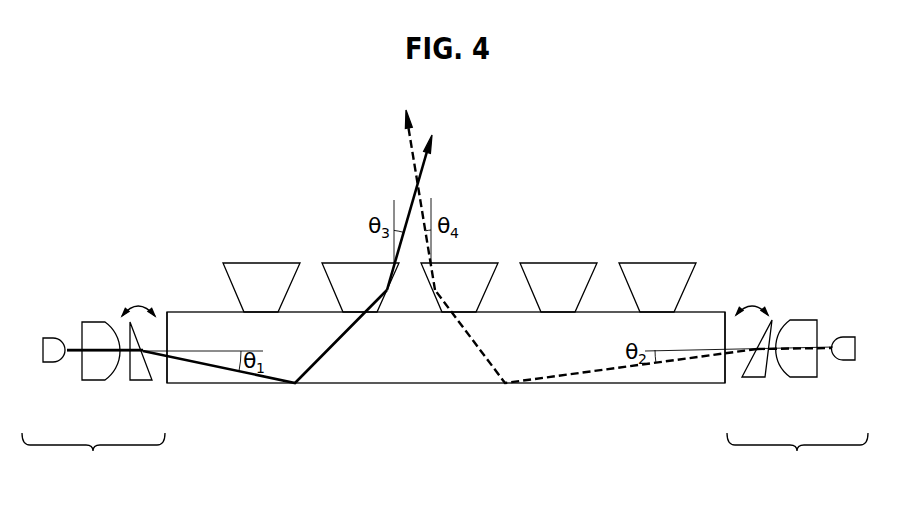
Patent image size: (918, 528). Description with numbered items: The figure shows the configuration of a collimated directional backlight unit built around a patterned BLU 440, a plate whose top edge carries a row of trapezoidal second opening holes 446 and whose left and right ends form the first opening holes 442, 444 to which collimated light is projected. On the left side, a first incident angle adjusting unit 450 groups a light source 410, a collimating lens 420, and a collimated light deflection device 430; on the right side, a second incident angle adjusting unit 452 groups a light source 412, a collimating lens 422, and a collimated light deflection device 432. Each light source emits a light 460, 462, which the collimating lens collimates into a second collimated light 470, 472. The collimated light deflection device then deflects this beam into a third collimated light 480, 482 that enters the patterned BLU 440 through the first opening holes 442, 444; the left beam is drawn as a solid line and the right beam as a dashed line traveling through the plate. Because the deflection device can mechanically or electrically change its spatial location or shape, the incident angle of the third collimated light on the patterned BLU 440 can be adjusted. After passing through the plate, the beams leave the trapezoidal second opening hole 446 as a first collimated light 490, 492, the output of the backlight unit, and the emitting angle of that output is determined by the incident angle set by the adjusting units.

The light source 410 is at (48, 366).
The light source 412 is at (850, 363).
The collimating lens 420 is at (95, 383).
The collimating lens 422 is at (805, 380).
The collimated light deflection device 430 is at (142, 383).
The collimated light deflection device 432 is at (753, 380).
The patterned BLU 440 is at (437, 385).
The first opening hole 442 is at (166, 314).
The first opening hole 444 is at (725, 313).
The second opening hole 446 is at (260, 263).
The first incident angle adjusting unit 450 is at (93, 460).
The second incident angle adjusting unit 452 is at (797, 458).
The light 460 is at (76, 348).
The light 462 is at (826, 343).
The second collimated light 470 is at (120, 324).
The second collimated light 472 is at (777, 342).
The third collimated light 480 is at (208, 368).
The third collimated light 482 is at (633, 368).
The first collimated light 490 is at (432, 158).
The first collimated light 492 is at (412, 150).